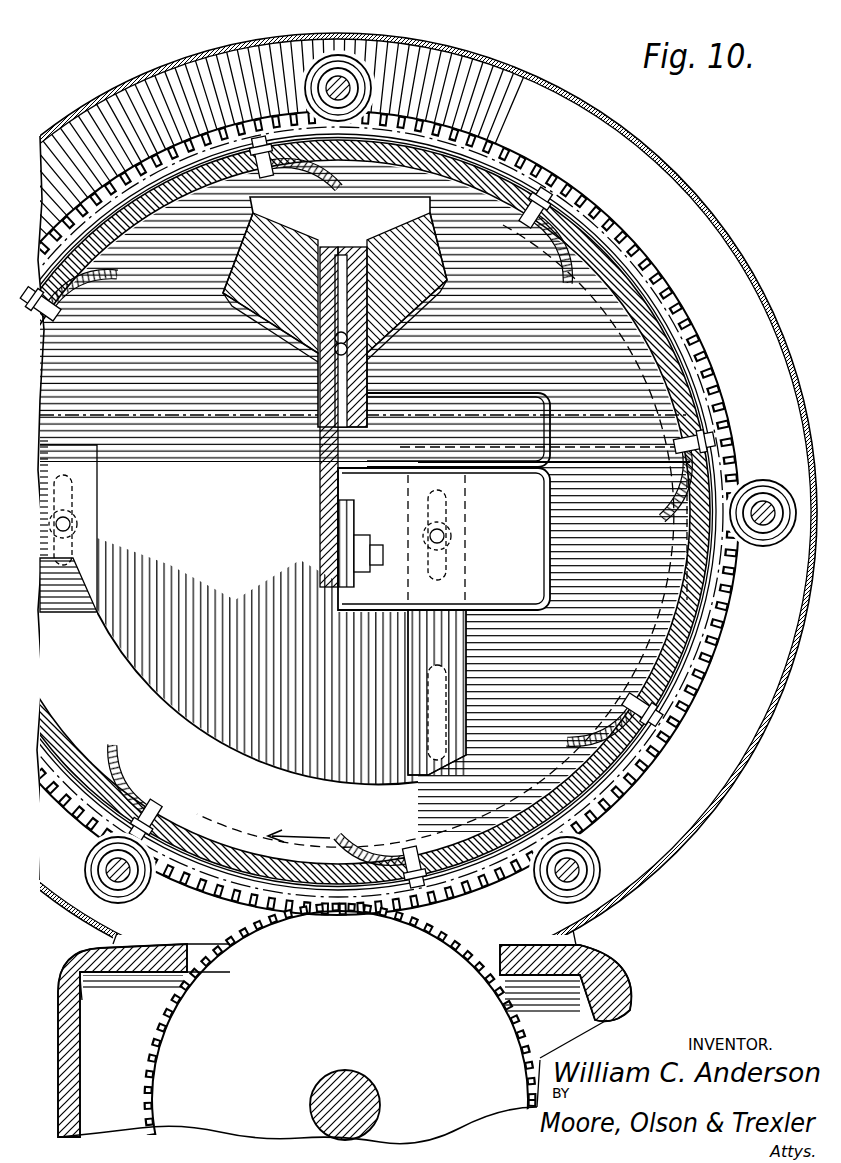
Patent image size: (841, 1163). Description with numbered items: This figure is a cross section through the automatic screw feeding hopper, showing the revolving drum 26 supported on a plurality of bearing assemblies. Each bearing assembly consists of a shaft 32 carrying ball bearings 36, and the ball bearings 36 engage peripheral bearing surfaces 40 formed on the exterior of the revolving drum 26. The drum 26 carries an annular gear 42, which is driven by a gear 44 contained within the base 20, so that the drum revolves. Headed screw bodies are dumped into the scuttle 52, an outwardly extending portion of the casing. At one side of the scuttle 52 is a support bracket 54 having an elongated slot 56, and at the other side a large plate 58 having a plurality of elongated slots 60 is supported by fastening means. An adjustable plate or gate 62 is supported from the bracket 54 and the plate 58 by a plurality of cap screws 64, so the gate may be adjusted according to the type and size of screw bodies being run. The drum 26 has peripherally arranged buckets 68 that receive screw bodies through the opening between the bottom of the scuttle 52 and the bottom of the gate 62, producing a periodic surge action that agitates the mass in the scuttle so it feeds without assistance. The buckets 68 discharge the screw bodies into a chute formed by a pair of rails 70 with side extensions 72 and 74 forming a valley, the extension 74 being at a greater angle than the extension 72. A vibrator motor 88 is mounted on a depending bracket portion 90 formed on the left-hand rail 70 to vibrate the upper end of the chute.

The base 20 is at (610, 965).
The revolving drum 26 is at (495, 828).
The shaft 32 is at (763, 526).
The ball bearing 36 is at (602, 862).
The peripheral bearing surfaces 40 is at (735, 598).
The annular gear 42 is at (606, 787).
The gear 44 is at (182, 1035).
The scuttle 52 is at (215, 828).
The support bracket 54 is at (60, 600).
The elongated slot 56 is at (70, 485).
The plate 58 is at (578, 465).
The elongated slots 60 is at (440, 668).
The gate 62 is at (270, 762).
The cap screws 64 is at (77, 520).
The buckets 68 is at (574, 717).
The rails 70 is at (351, 262).
The side extension 72 is at (255, 264).
The side extension 74 is at (432, 272).
The motor or vibrator 88 is at (534, 390).
The depending bracket portion 90 is at (320, 486).